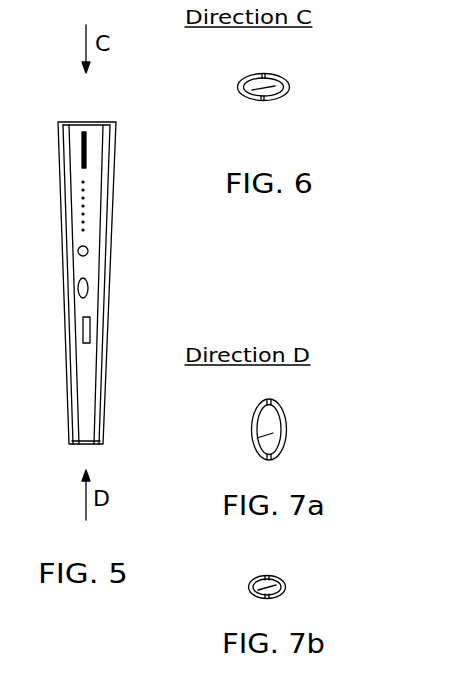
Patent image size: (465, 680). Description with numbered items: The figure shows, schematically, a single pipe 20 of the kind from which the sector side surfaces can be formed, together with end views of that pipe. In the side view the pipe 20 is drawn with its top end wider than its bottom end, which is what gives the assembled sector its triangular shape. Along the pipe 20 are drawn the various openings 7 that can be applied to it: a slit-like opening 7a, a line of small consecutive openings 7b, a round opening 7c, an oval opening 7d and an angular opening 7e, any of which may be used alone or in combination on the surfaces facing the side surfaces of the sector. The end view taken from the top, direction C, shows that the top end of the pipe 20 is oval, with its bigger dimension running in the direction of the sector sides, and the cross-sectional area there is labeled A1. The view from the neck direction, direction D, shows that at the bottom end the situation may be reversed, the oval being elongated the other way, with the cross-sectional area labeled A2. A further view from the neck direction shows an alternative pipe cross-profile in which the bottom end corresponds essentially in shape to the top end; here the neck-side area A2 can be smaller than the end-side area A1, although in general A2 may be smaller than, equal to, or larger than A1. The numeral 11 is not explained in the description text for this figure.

In FIG. 6, the openings 7 is at (264, 74).
In FIG. 7A, the openings 7 is at (269, 401).
In FIG. 7B, the openings 7 is at (267, 576).
In FIG. 5, the slit-like openings 7a is at (80, 150).
In FIG. 5, the line of small consecutive openings 7b is at (83, 207).
In FIG. 5, the round openings 7c is at (88, 251).
In FIG. 5, the oval openings 7d is at (90, 288).
In FIG. 5, the angular openings 7e is at (90, 333).
In FIG. 6, the tubular body / sleeve 11 is at (240, 89).
In FIG. 7A, the tubular body / sleeve 11 is at (252, 438).
In FIG. 7B, the tubular body / sleeve 11 is at (248, 589).
In FIG. 5, the pipe 20 is at (48, 342).
In FIG. 6, the area at the end A1 is at (286, 94).
In FIG. 7A, the cross-sectional area at the neck section end A2 is at (282, 439).
In FIG. 7B, the cross-sectional area at the neck section end A2 is at (286, 588).